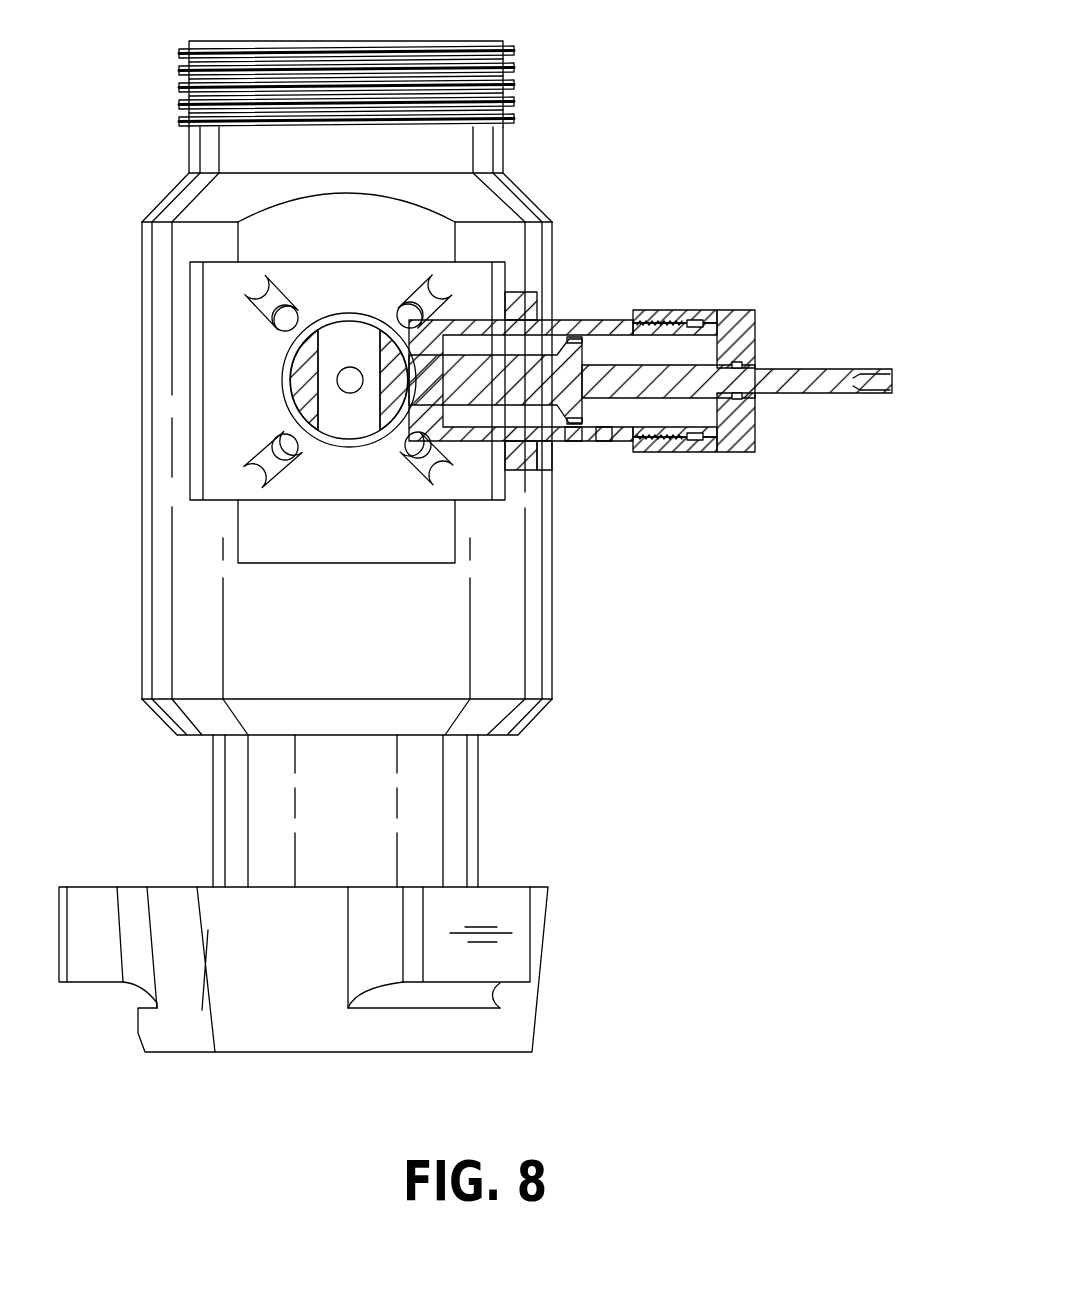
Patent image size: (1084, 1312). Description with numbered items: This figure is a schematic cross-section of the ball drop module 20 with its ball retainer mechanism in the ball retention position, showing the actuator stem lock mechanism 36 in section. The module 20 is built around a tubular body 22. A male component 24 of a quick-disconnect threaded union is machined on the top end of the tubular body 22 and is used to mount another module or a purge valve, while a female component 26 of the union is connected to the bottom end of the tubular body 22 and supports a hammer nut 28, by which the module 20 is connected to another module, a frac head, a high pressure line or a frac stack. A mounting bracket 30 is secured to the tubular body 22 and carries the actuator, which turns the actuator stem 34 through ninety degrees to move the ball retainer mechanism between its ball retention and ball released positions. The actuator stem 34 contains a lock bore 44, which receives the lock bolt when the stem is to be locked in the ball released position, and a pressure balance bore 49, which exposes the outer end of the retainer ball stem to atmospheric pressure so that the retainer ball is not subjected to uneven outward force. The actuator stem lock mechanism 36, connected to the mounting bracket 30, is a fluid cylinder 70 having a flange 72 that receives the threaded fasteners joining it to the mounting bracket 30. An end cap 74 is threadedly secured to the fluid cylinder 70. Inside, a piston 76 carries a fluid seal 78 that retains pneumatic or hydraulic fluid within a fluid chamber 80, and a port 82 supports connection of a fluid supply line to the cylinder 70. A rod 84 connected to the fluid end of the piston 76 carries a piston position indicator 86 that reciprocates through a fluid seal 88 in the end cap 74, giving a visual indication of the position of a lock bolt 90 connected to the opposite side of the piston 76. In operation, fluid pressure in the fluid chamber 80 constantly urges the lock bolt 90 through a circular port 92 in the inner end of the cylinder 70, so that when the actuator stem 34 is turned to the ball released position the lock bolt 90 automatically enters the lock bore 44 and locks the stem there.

The ball drop module 20 is at (687, 163).
The tubular body 22 is at (550, 580).
The male component 24 is at (514, 84).
The female component 26 is at (488, 812).
The hammer nut 28 is at (545, 927).
The mounting bracket 30 is at (188, 370).
The actuator stem 34 is at (305, 357).
The actuator stem lock mechanism 36 is at (680, 312).
The lock bore 44 is at (343, 417).
The pressure balance bore 49 is at (350, 380).
The fluid cylinder 70 is at (573, 443).
The flange 72 is at (515, 292).
The end cap 74 is at (745, 312).
The piston 76 is at (566, 338).
The fluid seal 78 is at (582, 418).
The fluid chamber 80 is at (693, 406).
The port 82 is at (603, 433).
The rod 84 is at (757, 335).
The piston position indicator 86 is at (888, 394).
The fluid seal 88 is at (757, 365).
The lock bolt 90 is at (552, 441).
The circular port 92 is at (427, 322).